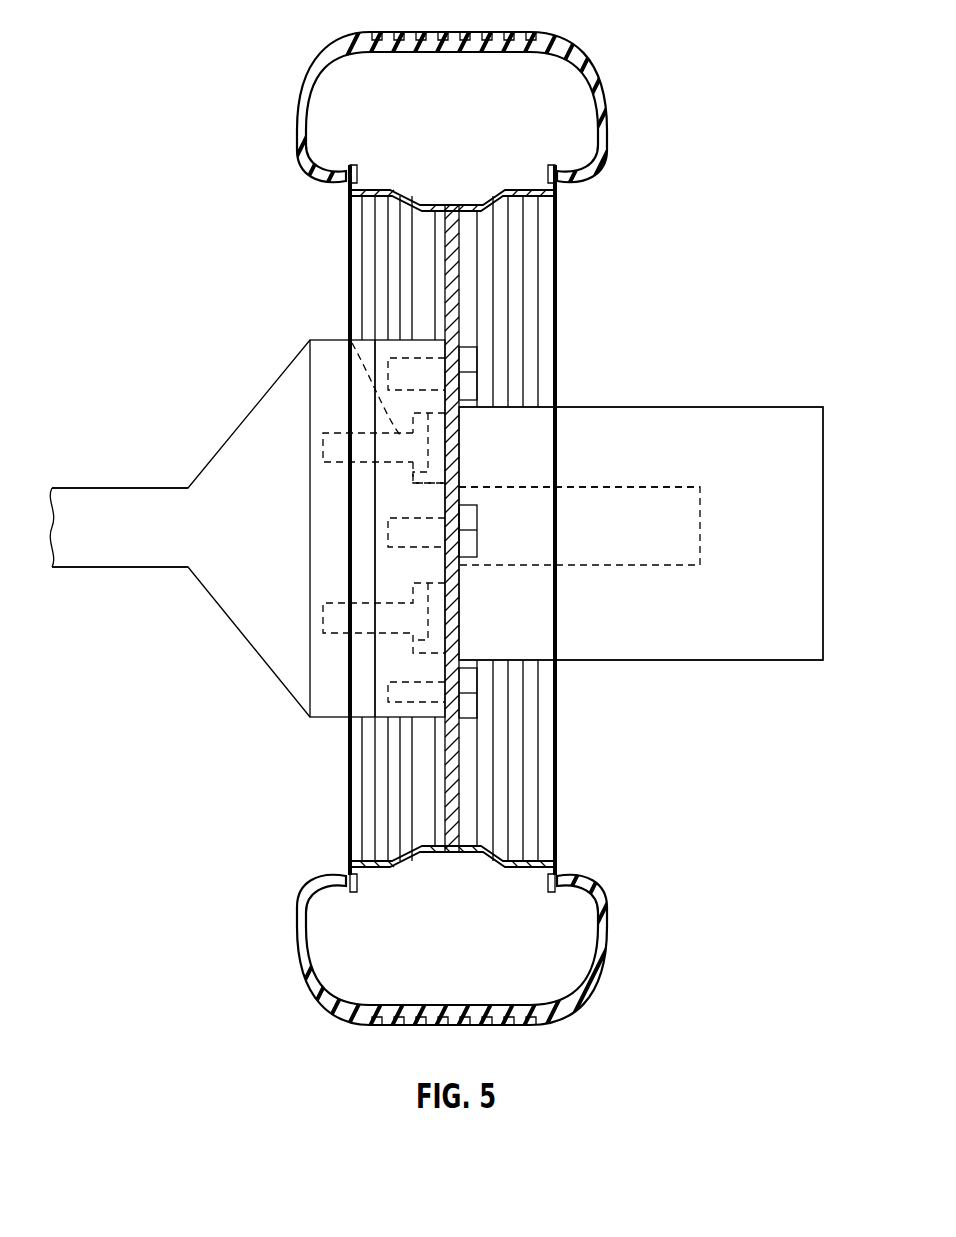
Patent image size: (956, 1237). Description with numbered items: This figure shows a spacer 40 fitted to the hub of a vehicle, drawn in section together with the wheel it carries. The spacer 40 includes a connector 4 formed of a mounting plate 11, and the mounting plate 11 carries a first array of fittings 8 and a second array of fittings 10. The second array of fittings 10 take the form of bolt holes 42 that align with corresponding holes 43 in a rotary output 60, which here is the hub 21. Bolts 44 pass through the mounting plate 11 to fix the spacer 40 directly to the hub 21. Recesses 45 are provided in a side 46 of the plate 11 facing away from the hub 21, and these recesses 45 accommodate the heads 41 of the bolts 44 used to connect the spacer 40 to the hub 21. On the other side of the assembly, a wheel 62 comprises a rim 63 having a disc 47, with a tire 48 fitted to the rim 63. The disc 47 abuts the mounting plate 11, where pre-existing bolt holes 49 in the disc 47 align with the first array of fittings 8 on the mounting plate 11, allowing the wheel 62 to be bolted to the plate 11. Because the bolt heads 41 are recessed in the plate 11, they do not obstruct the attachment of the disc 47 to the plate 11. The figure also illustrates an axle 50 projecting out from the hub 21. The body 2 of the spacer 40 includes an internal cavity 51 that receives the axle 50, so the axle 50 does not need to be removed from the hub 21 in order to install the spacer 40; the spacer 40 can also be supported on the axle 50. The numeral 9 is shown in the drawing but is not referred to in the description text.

The body 2 is at (647, 660).
The connector 4 is at (375, 340).
The first array of fittings 8 is at (468, 346).
The lower sensor unit 9 is at (478, 708).
The second array of fittings 10 is at (386, 428).
The mounting plate 11 is at (418, 345).
The hub 21 is at (257, 640).
The spacer 40 is at (722, 660).
The bolt heads 41 is at (436, 476).
The bolt holes 42 is at (345, 332).
The holes 43 is at (322, 444).
The bolts 44 is at (400, 452).
The recesses 45 is at (435, 448).
The side 46 is at (440, 572).
The disc 47 is at (452, 760).
The tire 48 is at (303, 948).
The pre-existing bolt holes 49 is at (470, 716).
The axle 50 is at (589, 487).
The internal cavity 51 is at (668, 488).
The rotary output 60 is at (233, 608).
The wheel 62 is at (306, 787).
The rim 63 is at (348, 818).